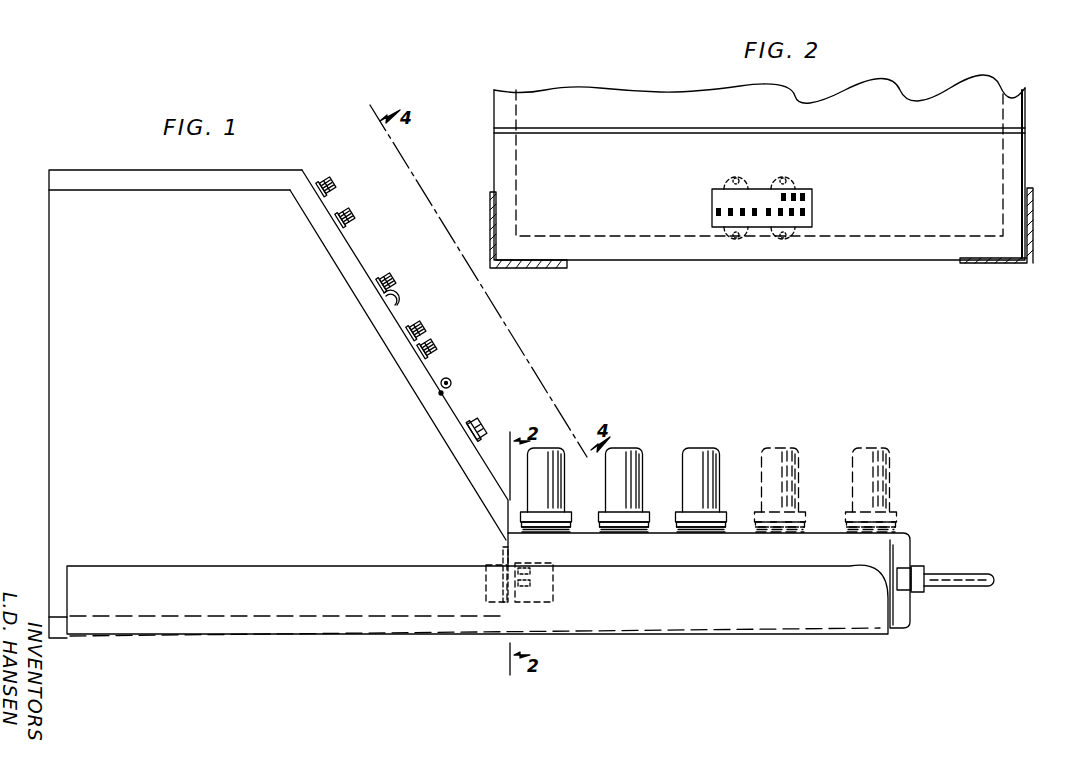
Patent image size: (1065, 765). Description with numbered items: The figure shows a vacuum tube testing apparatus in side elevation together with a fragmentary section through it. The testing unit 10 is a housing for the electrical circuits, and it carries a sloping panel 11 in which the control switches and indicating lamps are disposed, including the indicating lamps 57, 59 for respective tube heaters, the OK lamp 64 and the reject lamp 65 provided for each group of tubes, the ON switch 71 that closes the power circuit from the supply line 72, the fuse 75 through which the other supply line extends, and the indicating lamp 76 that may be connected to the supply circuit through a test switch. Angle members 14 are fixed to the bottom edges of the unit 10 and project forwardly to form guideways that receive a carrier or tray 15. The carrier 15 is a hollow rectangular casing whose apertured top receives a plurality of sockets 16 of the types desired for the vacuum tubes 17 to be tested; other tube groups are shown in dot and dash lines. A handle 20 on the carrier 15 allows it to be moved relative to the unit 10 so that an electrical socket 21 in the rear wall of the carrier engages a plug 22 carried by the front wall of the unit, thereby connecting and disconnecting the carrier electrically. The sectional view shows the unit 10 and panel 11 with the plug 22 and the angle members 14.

In FIG. 1, the testing unit 10 is at (50, 265).
In FIG. 2, the testing unit 10 is at (911, 248).
In FIG. 1, the panel 11 is at (342, 255).
In FIG. 2, the panel 11 is at (578, 96).
In FIG. 1, the angle members 14 is at (268, 603).
In FIG. 2, the angle members 14 is at (516, 270).
In FIG. 1, the carrier or tray 15 is at (820, 537).
In FIG. 1, the sockets 16 is at (555, 532).
In FIG. 1, the vacuum tubes 17 is at (563, 505).
In FIG. 1, the handle 20 is at (970, 575).
In FIG. 1, the electrical socket 21 is at (556, 588).
In FIG. 1, the plug 22 is at (488, 585).
In FIG. 2, the plug 22 is at (757, 196).
In FIG. 1, the indicating lamp 57 is at (433, 352).
In FIG. 1, the indicating lamp 59 is at (391, 280).
In FIG. 1, the OK lamp 64 is at (331, 184).
In FIG. 1, the reject lamp 65 is at (350, 216).
In FIG. 1, the ON switch 71 is at (452, 383).
In FIG. 1, the supply line 72 is at (480, 423).
In FIG. 1, the fuse 75 is at (398, 303).
In FIG. 1, the indicating lamp 76 is at (422, 331).